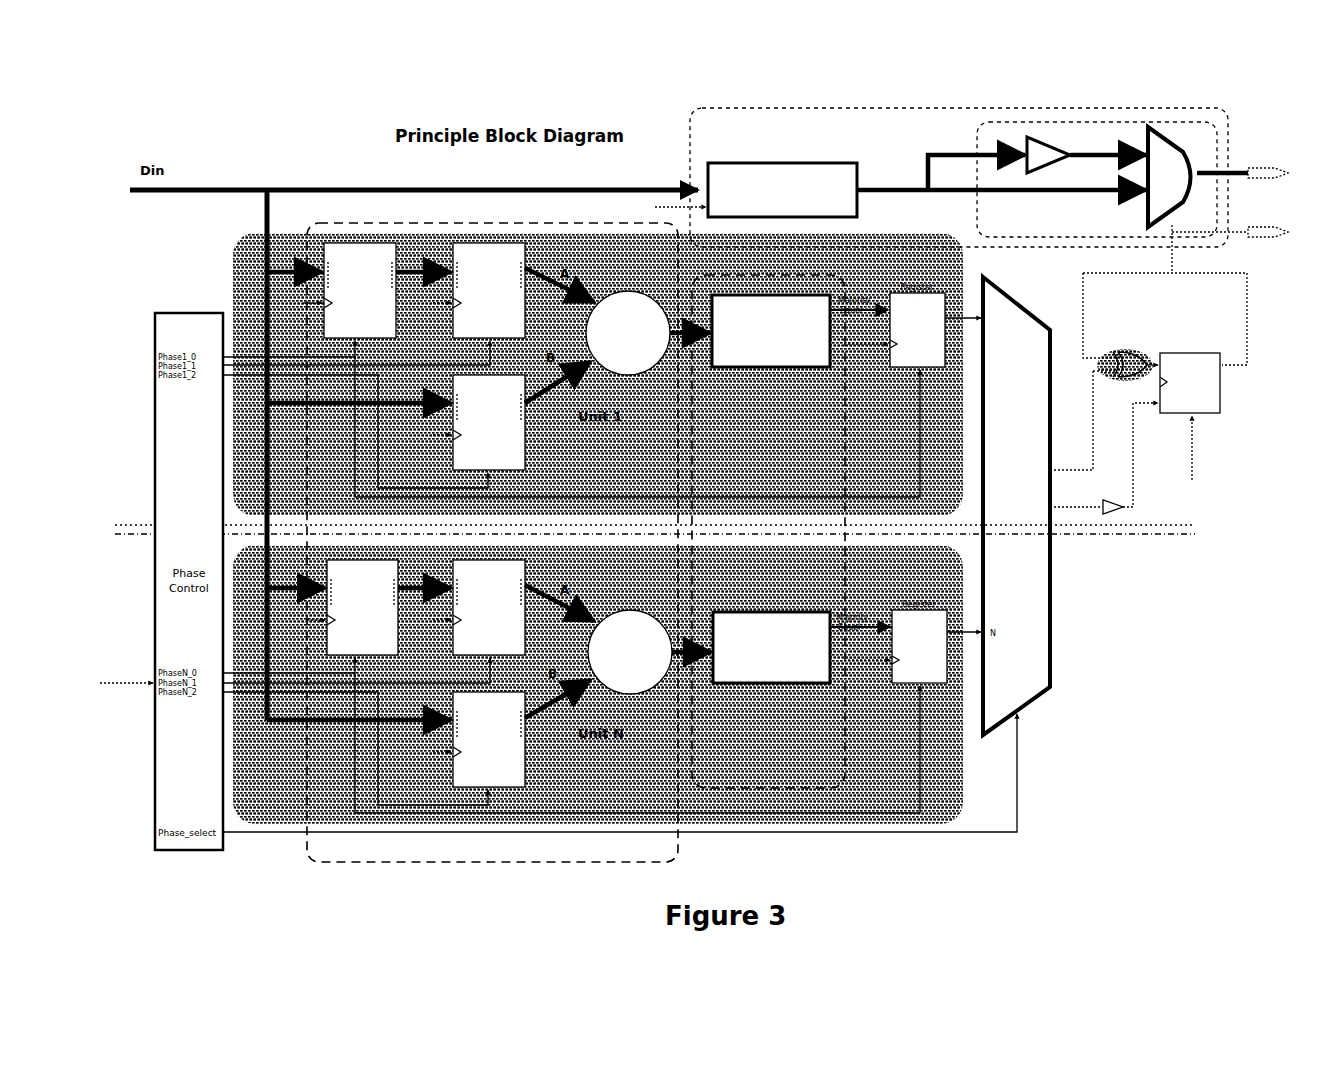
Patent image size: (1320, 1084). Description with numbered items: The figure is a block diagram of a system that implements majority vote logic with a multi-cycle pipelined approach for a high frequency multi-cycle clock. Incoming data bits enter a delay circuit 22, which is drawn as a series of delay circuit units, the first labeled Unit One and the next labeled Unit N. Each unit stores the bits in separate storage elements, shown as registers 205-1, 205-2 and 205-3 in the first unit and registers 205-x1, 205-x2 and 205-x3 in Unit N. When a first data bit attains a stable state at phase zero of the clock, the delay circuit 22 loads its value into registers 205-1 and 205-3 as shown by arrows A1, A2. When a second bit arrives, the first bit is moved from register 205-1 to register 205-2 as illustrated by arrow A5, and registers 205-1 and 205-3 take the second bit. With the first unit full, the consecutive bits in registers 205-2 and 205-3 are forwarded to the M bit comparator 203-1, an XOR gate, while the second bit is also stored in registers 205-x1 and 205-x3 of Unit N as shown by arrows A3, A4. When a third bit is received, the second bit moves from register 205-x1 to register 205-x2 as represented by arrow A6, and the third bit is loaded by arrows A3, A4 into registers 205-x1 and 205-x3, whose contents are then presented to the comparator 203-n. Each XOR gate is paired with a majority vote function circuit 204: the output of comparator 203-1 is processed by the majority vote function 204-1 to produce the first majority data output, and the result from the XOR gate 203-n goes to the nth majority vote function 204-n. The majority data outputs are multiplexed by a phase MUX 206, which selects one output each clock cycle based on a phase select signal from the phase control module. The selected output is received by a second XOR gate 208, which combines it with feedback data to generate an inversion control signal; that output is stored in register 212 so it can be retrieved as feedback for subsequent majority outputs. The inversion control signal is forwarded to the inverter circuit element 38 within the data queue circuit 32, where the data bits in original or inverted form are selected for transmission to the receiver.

The delay circuit 22 is at (492, 542).
The data queue circuit 32 is at (732, 132).
The inverter circuit element 38 is at (1082, 133).
The M bit comparator 203-1 is at (634, 302).
The comparator 203-n is at (645, 624).
The majority vote function circuit 204 is at (800, 568).
The majority vote function 204-1 is at (812, 300).
The nth majority vote function 204-n is at (812, 618).
The register 205-1 is at (383, 243).
The register 205-2 is at (511, 252).
The register 205-3 is at (513, 447).
The register 205-x1 is at (390, 645).
The register 205-x2 is at (511, 570).
The register 205-x3 is at (513, 760).
The phase MUX 206 is at (1036, 678).
The second XOR gate 208 is at (1132, 352).
The register 212 is at (1210, 408).
The arrow A1 is at (282, 267).
The arrow A2 is at (335, 407).
The arrow A3 is at (288, 582).
The arrow A4 is at (280, 724).
The arrow A5 is at (428, 268).
The arrow A6 is at (420, 585).